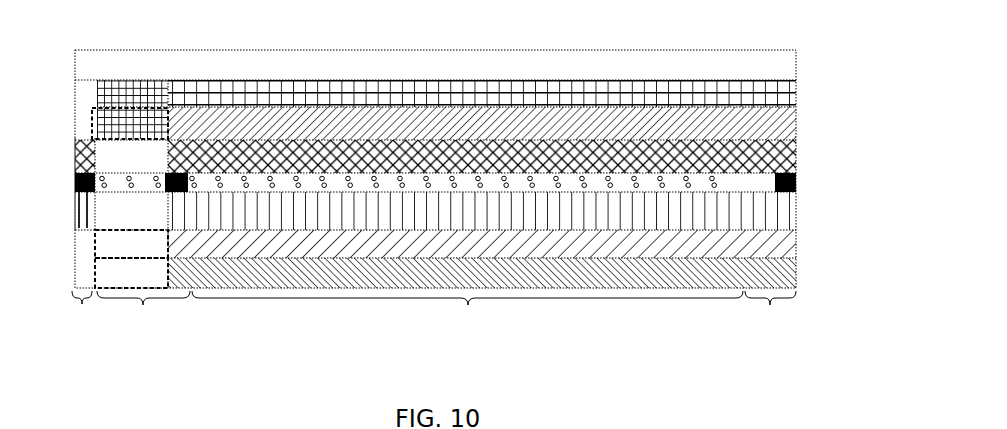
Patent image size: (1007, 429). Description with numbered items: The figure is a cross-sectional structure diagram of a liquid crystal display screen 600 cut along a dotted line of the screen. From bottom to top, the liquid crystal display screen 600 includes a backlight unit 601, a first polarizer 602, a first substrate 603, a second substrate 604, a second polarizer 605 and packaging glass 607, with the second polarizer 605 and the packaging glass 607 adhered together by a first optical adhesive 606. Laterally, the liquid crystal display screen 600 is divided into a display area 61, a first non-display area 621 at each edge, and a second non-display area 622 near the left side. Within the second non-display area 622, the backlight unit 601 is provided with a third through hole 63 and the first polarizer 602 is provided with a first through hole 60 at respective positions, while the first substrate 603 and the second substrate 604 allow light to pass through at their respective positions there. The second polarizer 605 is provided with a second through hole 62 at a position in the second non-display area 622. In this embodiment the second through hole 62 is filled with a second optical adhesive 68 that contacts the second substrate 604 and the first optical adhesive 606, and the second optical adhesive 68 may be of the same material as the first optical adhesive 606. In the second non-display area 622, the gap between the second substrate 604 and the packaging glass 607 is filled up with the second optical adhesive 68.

The liquid crystal display screen 600 is at (757, 33).
The backlight unit 601 is at (796, 275).
The first polarizer 602 is at (796, 235).
The first substrate 603 is at (796, 196).
The second substrate 604 is at (796, 163).
The second polarizer 605 is at (796, 130).
The first optical adhesive 606 is at (796, 97).
The packaging glass 607 is at (796, 53).
The first through hole 60 is at (95, 238).
The display area 61 is at (467, 314).
The second through hole 62 is at (92, 120).
The third through hole 63 is at (95, 273).
The second optical adhesive 68 is at (97, 90).
The first non-display area 621 is at (430, 310).
The second non-display area 622 is at (143, 310).